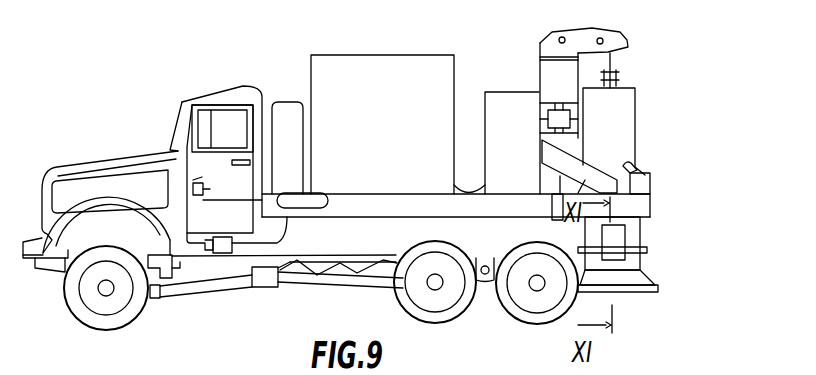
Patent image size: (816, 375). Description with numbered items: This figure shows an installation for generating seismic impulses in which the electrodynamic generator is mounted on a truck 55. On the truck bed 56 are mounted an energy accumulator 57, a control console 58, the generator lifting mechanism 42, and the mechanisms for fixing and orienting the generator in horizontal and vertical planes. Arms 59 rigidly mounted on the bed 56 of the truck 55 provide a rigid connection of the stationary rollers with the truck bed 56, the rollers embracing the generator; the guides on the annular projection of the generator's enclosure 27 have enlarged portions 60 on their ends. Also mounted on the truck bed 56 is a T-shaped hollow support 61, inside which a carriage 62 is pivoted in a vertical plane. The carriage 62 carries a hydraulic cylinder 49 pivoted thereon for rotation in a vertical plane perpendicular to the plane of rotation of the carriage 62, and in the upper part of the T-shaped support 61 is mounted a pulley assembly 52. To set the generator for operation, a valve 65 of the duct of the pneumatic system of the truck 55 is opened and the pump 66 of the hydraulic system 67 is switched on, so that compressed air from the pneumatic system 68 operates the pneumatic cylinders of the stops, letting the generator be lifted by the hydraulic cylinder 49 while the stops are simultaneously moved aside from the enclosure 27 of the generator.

The enclosure 27 is at (623, 97).
The lifting mechanism 42 is at (536, 68).
The hydraulic cylinder 49 is at (558, 131).
The pulley assembly 52 is at (617, 40).
The truck 55 is at (122, 163).
The truck bed 56 is at (362, 203).
The energy accumulator 57 is at (425, 62).
The control console 58 is at (492, 100).
The arms 59 is at (648, 183).
The enlarged portions 60 is at (618, 160).
The T-shaped hollow support 61 is at (567, 72).
The carriage 62 is at (548, 118).
The valve 65 is at (193, 183).
The pump 66 is at (220, 253).
The hydraulic system 67 is at (404, 206).
The pneumatic system 68 is at (313, 196).